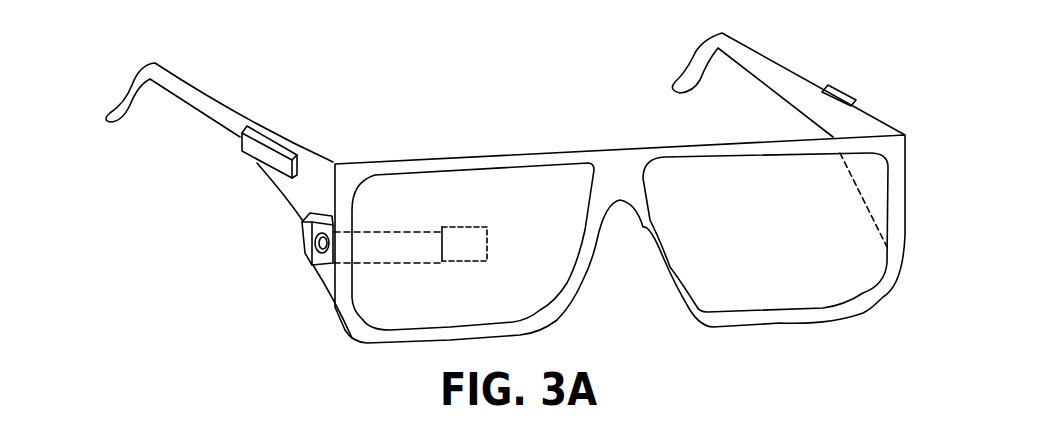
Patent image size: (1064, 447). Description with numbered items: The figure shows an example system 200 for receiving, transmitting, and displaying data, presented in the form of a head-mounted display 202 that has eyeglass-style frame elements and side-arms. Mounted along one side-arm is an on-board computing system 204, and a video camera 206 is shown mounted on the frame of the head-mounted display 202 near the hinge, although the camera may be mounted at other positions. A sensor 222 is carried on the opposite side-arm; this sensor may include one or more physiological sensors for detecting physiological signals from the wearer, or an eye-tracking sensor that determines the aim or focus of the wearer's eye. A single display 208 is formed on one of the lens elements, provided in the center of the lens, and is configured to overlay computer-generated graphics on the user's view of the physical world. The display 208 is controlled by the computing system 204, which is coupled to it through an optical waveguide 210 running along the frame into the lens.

The system 200 is at (488, 86).
The head-mounted display 202 is at (955, 200).
The on-board computing system 204 is at (258, 152).
The video camera 206 is at (303, 247).
The display 208 is at (462, 262).
The optical waveguide 210 is at (378, 264).
The sensor 222 is at (854, 102).